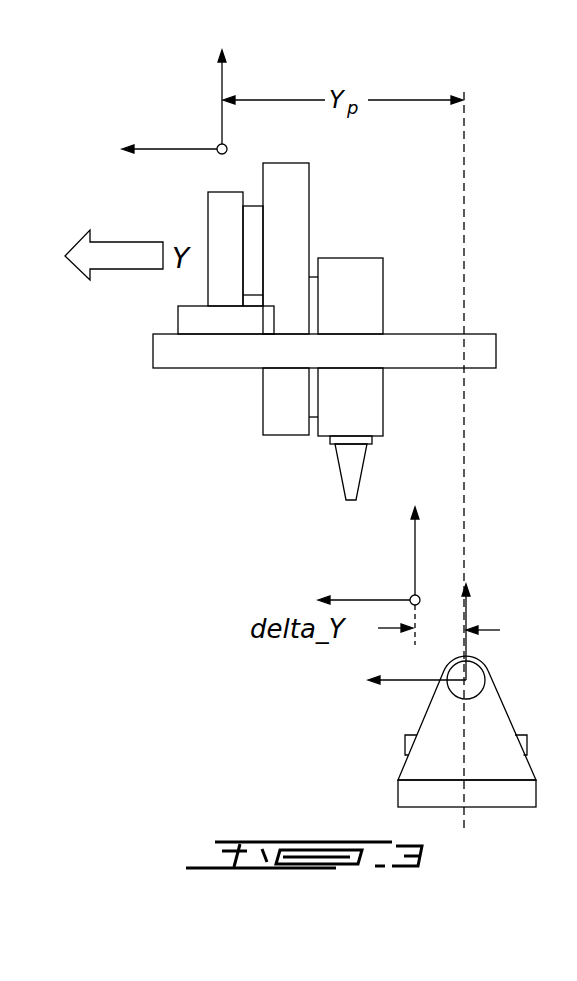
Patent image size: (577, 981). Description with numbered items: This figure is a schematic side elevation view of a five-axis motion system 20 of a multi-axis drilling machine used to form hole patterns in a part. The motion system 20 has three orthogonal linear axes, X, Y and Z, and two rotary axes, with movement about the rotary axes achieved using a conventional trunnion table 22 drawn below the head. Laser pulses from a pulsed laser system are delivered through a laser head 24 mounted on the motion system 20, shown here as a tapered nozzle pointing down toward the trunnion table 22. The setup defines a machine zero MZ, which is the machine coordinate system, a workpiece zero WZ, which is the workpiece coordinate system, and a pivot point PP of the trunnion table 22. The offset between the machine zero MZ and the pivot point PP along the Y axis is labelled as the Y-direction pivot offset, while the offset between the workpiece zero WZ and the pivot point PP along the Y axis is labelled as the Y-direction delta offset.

The motion system 20 is at (138, 448).
The trunnion table 22 is at (368, 730).
The laser head 24 is at (355, 478).
The machine zero MZ is at (218, 146).
The workpiece zero WZ is at (410, 596).
The pivot point PP is at (485, 680).